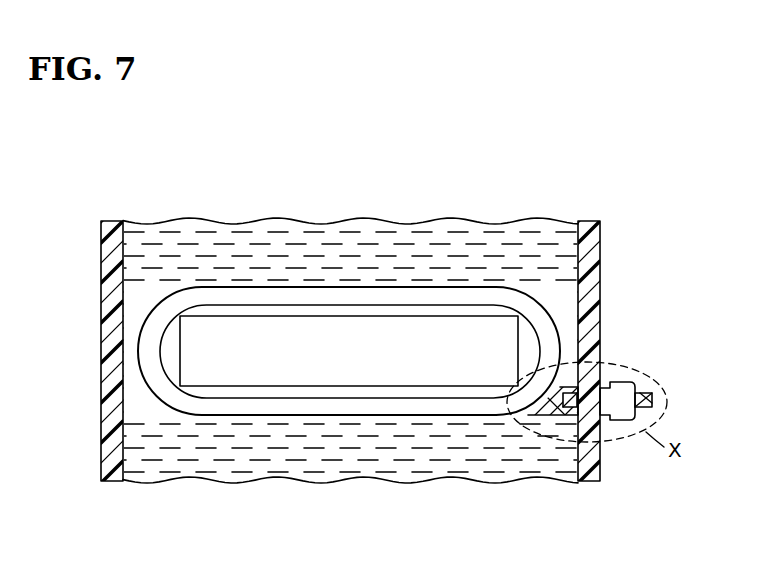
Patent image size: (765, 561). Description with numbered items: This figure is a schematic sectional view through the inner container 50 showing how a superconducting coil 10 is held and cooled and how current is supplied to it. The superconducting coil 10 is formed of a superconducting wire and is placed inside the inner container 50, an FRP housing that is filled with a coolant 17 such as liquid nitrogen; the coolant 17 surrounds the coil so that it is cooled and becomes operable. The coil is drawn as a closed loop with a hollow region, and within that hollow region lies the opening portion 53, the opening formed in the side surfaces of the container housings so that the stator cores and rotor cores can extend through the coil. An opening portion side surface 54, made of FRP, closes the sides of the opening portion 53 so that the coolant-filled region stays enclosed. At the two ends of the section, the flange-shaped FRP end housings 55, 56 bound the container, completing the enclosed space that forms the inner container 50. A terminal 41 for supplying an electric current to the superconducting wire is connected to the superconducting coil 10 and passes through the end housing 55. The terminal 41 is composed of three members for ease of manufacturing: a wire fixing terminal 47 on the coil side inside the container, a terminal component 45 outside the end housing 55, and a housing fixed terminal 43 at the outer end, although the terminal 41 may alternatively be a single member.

The superconducting coil 10 is at (293, 298).
The coolant 17 is at (550, 292).
The terminal 41 is at (661, 357).
The housing fixed terminal 43 is at (653, 402).
The terminal component 45 is at (622, 389).
The wire fixing terminal 47 is at (553, 405).
The inner container 50 is at (634, 208).
The opening portion 53 is at (428, 350).
The opening portion side surface 54 is at (362, 320).
The end housing 55 is at (588, 266).
The end housing 56 is at (112, 344).